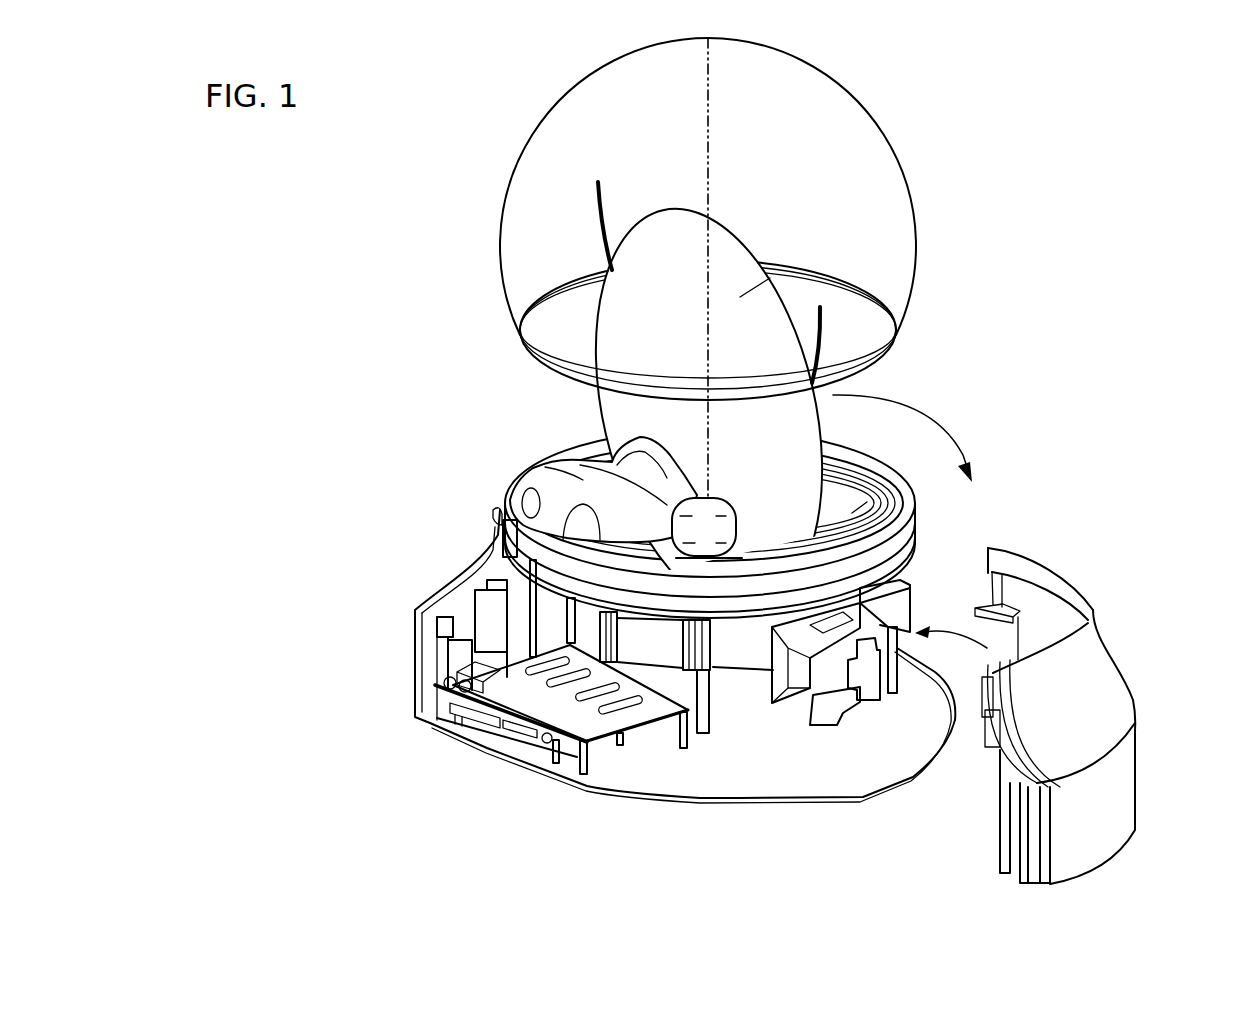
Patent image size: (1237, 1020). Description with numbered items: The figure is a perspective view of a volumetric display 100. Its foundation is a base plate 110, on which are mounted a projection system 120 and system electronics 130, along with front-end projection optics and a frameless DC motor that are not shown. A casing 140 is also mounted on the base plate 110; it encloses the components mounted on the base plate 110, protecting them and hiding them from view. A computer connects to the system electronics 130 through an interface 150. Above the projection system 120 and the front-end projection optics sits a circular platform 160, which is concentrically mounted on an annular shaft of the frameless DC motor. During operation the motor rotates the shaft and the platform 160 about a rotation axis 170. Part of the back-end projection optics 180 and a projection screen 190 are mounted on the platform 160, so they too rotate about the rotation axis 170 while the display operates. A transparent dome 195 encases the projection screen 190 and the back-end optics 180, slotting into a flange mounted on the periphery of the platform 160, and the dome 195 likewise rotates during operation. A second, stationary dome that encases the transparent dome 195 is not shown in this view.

The volumetric display 100 is at (450, 213).
The base plate 110 is at (762, 753).
The projection system 120 is at (910, 595).
The system electronics 130 is at (537, 700).
The casing 140 is at (1083, 681).
The interface 150 is at (492, 748).
The circular platform 160 is at (907, 490).
The rotation axis 170 is at (712, 147).
The back-end projection optics 180 is at (560, 456).
The projection screen 190 is at (905, 291).
The transparent dome 195 is at (877, 163).